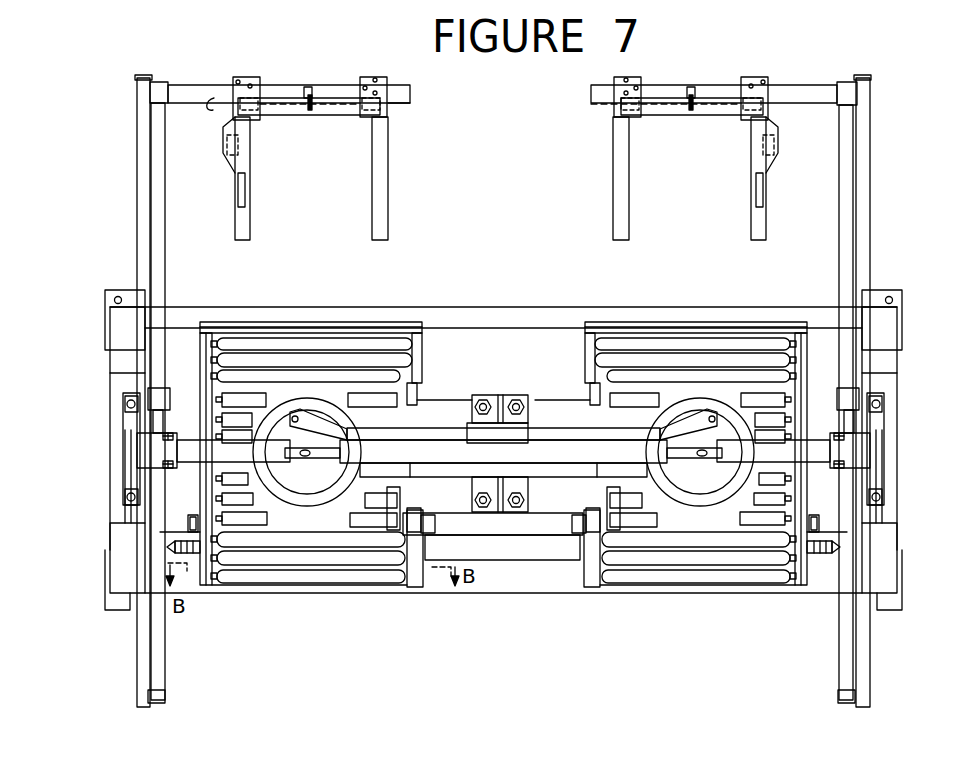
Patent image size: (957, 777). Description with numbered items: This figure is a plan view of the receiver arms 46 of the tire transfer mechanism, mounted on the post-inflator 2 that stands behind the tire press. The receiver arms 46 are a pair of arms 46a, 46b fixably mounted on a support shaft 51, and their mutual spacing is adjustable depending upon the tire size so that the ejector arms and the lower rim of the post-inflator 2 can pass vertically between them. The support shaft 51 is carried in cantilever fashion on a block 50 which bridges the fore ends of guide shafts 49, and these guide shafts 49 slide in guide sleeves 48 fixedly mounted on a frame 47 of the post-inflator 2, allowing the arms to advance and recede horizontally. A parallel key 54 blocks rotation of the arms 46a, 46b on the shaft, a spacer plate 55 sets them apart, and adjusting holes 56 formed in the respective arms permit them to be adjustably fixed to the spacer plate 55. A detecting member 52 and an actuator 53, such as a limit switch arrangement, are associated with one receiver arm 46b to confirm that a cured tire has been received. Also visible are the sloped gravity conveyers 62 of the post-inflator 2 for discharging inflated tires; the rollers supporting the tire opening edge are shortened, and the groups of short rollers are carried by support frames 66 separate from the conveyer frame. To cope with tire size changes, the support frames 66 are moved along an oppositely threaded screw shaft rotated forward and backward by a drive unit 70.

The post-inflator 2 is at (515, 600).
The receiver arms 46 is at (504, 190).
The receiver arm 46a is at (388, 160).
The receiver arm 46b is at (243, 230).
The frame 47 is at (108, 428).
The guide sleeves 48 is at (168, 398).
The guide shafts 49 is at (160, 200).
The block 50 is at (160, 94).
The support shaft 51 is at (197, 85).
The detecting member 52 is at (225, 145).
The actuator 53 is at (247, 203).
The parallel key 54 is at (214, 98).
The spacer plate 55 is at (290, 117).
The adjusting holes 56 is at (255, 77).
The gravity conveyers 62 is at (330, 348).
The support frames 66 is at (252, 525).
The drive unit 70 is at (190, 572).